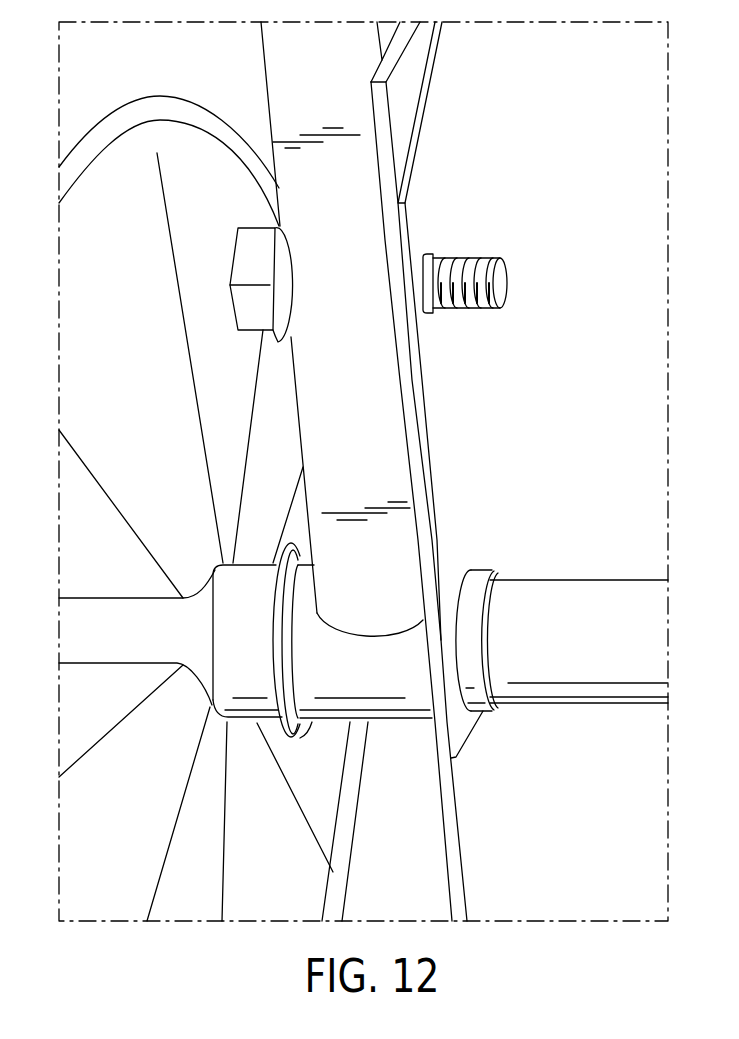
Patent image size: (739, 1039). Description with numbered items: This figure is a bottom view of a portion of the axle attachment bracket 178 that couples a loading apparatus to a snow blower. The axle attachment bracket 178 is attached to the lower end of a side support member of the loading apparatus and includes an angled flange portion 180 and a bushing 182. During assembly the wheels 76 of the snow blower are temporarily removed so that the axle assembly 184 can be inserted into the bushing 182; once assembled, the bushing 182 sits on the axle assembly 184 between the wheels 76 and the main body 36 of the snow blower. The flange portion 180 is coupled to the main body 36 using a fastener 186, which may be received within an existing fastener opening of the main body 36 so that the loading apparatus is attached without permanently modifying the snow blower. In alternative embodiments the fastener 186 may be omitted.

The main body 36 is at (501, 133).
The wheels 76 is at (101, 122).
The axle attachment bracket 178 is at (201, 60).
The angled flange portion 180 is at (263, 47).
The bushing 182 is at (382, 722).
The axle assembly 184 is at (253, 563).
The fastener 186 is at (233, 257).